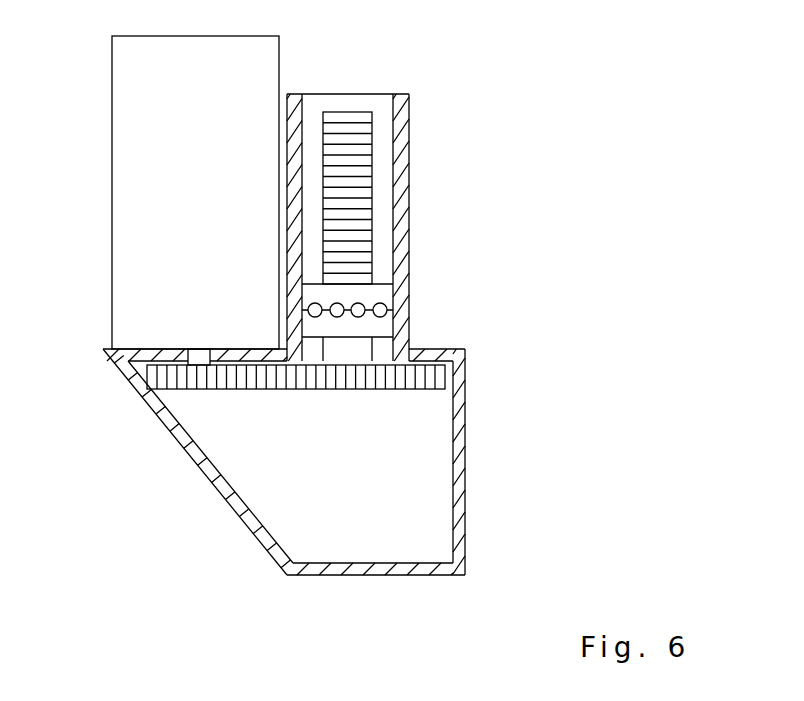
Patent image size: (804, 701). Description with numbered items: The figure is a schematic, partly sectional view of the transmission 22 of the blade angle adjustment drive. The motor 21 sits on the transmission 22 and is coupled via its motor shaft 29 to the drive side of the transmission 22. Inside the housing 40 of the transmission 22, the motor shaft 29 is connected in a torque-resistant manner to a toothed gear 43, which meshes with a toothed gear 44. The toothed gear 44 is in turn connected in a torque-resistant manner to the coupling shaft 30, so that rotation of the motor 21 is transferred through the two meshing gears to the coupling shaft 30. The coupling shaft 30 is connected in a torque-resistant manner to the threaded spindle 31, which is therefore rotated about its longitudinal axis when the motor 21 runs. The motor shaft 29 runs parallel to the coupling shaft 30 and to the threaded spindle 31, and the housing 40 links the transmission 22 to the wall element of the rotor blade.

The motor 21 is at (120, 62).
The transmission 22 is at (466, 449).
The motor shaft 29 is at (203, 356).
The coupling shaft 30 is at (373, 345).
The threaded spindle 31 is at (362, 113).
The housing 40 is at (158, 418).
The toothed gear 43 is at (225, 380).
The toothed gear 44 is at (370, 380).